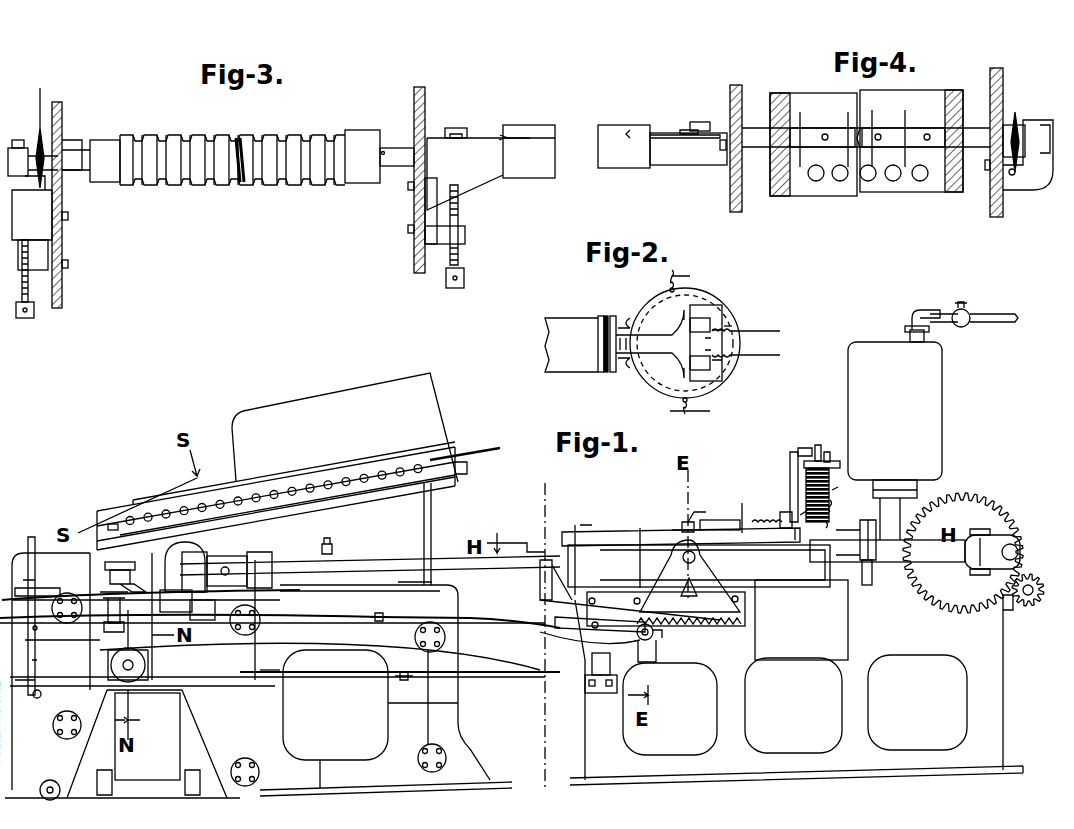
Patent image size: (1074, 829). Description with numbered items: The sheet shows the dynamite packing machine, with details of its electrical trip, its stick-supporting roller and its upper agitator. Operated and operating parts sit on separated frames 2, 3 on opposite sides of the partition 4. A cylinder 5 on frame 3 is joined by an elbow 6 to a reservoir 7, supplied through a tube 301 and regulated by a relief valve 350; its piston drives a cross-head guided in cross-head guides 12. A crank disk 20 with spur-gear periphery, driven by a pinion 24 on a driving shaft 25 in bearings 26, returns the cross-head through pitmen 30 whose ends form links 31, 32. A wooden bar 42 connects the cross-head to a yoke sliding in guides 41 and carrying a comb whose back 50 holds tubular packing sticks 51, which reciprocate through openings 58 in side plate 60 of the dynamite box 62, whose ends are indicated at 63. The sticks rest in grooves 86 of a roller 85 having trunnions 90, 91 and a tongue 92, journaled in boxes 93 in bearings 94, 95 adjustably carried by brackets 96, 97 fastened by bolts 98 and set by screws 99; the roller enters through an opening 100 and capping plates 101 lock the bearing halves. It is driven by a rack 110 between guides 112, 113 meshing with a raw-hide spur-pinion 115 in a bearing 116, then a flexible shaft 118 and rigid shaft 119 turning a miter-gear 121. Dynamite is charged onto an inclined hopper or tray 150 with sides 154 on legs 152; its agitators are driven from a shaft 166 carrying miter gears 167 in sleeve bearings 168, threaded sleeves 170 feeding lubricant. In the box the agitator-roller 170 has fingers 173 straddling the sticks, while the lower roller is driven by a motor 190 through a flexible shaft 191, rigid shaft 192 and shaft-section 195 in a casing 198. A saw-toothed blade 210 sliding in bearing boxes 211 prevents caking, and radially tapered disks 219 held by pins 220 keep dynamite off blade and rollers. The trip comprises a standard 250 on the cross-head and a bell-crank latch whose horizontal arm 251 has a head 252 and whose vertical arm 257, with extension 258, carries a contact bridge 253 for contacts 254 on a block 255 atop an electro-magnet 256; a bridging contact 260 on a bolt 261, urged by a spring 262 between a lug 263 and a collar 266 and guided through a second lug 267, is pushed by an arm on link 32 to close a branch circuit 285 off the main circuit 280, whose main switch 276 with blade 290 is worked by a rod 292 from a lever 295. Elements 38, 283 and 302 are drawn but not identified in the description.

In FIG. 3, the frame 2 is at (75, 300).
In FIG. 4, the frame 2 is at (730, 104).
In FIG. 1, the frame 2 is at (272, 675).
In FIG. 3, the frame 3 is at (5, 210).
In FIG. 1, the frame 3 is at (796, 690).
In FIG. 1, the partition 4 is at (545, 746).
In FIG. 1, the cylinder 5 is at (848, 532).
In FIG. 1, the elbow 6 is at (910, 508).
In FIG. 1, the reservoir 7 is at (930, 390).
In FIG. 1, the cross-head guides 12 is at (606, 530).
In FIG. 1, the crank disk 20 is at (950, 590).
In FIG. 1, the pinion 24 is at (1030, 606).
In FIG. 2, the driving shaft 25 is at (556, 338).
In FIG. 1, the driving shaft 25 is at (1033, 578).
In FIG. 1, the bearings 26 is at (1008, 612).
In FIG. 1, the pitmen 30 is at (886, 565).
In FIG. 1, the link 31 is at (832, 560).
In FIG. 1, the link 32 is at (790, 560).
In FIG. 4, the bearing 38 is at (990, 186).
In FIG. 1, the guides 41 is at (250, 560).
In FIG. 1, the wooden bar 42 is at (398, 568).
In FIG. 1, the back 50 is at (280, 560).
In FIG. 1, the packing sticks 51 is at (244, 552).
In FIG. 4, the openings 58 is at (916, 182).
In FIG. 4, the side plate 60 is at (822, 190).
In FIG. 4, the dynamite box 62 is at (936, 185).
In FIG. 4, the ends 63 is at (778, 93).
In FIG. 3, the roller 85 is at (193, 138).
In FIG. 3, the grooves 86 is at (312, 189).
In FIG. 3, the trunnion 90 is at (402, 164).
In FIG. 3, the trunnion 91 is at (70, 173).
In FIG. 4, the tongue 92 is at (684, 128).
In FIG. 4, the boxes 93 is at (1040, 172).
In FIG. 3, the bearing 94 is at (472, 178).
In FIG. 4, the bearing 94 is at (680, 158).
In FIG. 1, the bearing 94 is at (172, 588).
In FIG. 3, the bearing 95 is at (28, 230).
In FIG. 1, the bearing 95 is at (110, 576).
In FIG. 3, the bracket 96 is at (428, 220).
In FIG. 1, the bracket 96 is at (205, 622).
In FIG. 3, the bracket 97 is at (48, 250).
In FIG. 3, the bolts 98 is at (66, 270).
In FIG. 4, the bolts 98 is at (724, 166).
In FIG. 3, the screws 99 is at (26, 318).
In FIG. 1, the screws 99 is at (142, 642).
In FIG. 1, the opening 100 is at (182, 560).
In FIG. 3, the capping plates 101 is at (17, 142).
In FIG. 4, the capping plates 101 is at (698, 120).
In FIG. 1, the rack 110 is at (758, 628).
In FIG. 1, the guide 112 is at (666, 609).
In FIG. 1, the guide 113 is at (575, 630).
In FIG. 1, the raw-hide spur-pinion 115 is at (660, 632).
In FIG. 1, the bearing 116 is at (655, 652).
In FIG. 1, the flexible shaft 118 is at (518, 628).
In FIG. 1, the rigid shaft 119 is at (292, 618).
In FIG. 1, the miter-gear 121 is at (348, 468).
In FIG. 1, the hopper or tray 150 is at (376, 480).
In FIG. 1, the legs 152 is at (432, 516).
In FIG. 1, the sides 154 is at (162, 500).
In FIG. 1, the shaft 166 is at (492, 446).
In FIG. 1, the miter gears 167 is at (296, 478).
In FIG. 1, the sleeve bearings 168 is at (113, 524).
In FIG. 4, the agitator-roller 170 is at (795, 150).
In FIG. 1, the agitator-roller 170 is at (105, 566).
In FIG. 4, the fingers 173 is at (878, 124).
In FIG. 1, the variable speed electric motor 190 is at (606, 692).
In FIG. 1, the flexible shaft 191 is at (527, 674).
In FIG. 1, the rigid shaft 192 is at (336, 678).
In FIG. 1, the shaft-section 195 is at (145, 670).
In FIG. 1, the casing 198 is at (108, 674).
In FIG. 1, the saw-toothed blade 210 is at (122, 608).
In FIG. 1, the bearing boxes 211 is at (88, 630).
In FIG. 3, the radially tapered disks 219 is at (40, 116).
In FIG. 4, the radially tapered disks 219 is at (1016, 114).
In FIG. 3, the pins 220 is at (64, 140).
In FIG. 4, the pins 220 is at (1025, 130).
In FIG. 1, the standard 250 is at (680, 522).
In FIG. 1, the horizontal arm 251 is at (720, 520).
In FIG. 1, the head 252 is at (698, 510).
In FIG. 1, the contact bridge 253 is at (808, 468).
In FIG. 2, the contacts 254 is at (698, 312).
In FIG. 1, the contacts 254 is at (818, 444).
In FIG. 2, the block 255 is at (712, 364).
In FIG. 1, the block 255 is at (830, 452).
In FIG. 2, the electro-magnet 256 is at (662, 306).
In FIG. 1, the electro-magnet 256 is at (840, 463).
In FIG. 2, the vertical arm 257 is at (595, 320).
In FIG. 1, the vertical arm 257 is at (790, 470).
In FIG. 2, the extension 258 is at (614, 318).
In FIG. 1, the extension 258 is at (802, 448).
In FIG. 1, the bridging contact 260 is at (868, 585).
In FIG. 1, the bolt 261 is at (760, 560).
In FIG. 1, the spring 262 is at (770, 518).
In FIG. 1, the lug 263 is at (786, 512).
In FIG. 1, the collar 266 is at (780, 560).
In FIG. 1, the lug 267 is at (742, 503).
In FIG. 1, the main switch 276 is at (542, 580).
In FIG. 2, the main circuit 280 is at (776, 345).
In FIG. 2, the stem 283 is at (672, 366).
In FIG. 2, the branch circuit 285 is at (690, 276).
In FIG. 1, the branch circuit 285 is at (831, 504).
In FIG. 1, the blade 290 is at (545, 602).
In FIG. 1, the rod 292 is at (375, 621).
In FIG. 1, the lever 295 is at (32, 539).
In FIG. 1, the tube 301 is at (925, 313).
In FIG. 1, the fitting 302 is at (933, 334).
In FIG. 1, the relief valve 350 is at (970, 326).